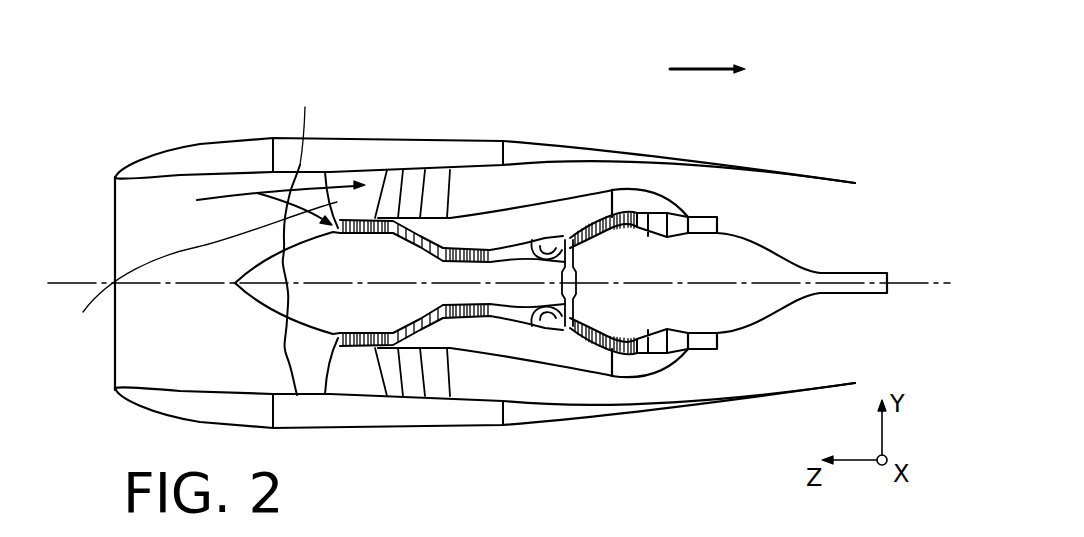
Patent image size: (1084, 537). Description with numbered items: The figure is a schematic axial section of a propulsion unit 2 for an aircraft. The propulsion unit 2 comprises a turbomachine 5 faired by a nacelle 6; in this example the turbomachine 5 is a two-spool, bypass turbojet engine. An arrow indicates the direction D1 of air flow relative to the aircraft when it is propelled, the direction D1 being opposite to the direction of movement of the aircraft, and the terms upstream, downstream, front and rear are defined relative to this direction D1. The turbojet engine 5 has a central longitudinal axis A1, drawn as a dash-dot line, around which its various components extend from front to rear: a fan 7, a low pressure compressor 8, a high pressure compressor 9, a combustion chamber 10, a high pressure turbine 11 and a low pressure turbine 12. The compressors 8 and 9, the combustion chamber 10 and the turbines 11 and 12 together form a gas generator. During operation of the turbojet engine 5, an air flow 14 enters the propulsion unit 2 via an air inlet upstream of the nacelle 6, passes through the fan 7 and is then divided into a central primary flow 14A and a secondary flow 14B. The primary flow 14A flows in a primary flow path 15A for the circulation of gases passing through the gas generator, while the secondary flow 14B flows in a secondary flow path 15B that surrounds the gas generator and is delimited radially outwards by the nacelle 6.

The propulsion unit 2 is at (206, 92).
The turbomachine 5 is at (745, 206).
The nacelle 6 is at (397, 150).
The fan 7 is at (298, 350).
The low pressure compressor 8 is at (367, 210).
The high pressure compressor 9 is at (480, 242).
The combustion chamber 10 is at (544, 232).
The high pressure turbine 11 is at (597, 209).
The low pressure turbine 12 is at (640, 207).
The air flow 14 is at (203, 197).
The central primary flow 14A is at (196, 270).
The secondary flow 14B is at (305, 123).
The primary flow path 15A is at (433, 320).
The secondary flow path 15B is at (570, 393).
The central longitudinal axis A1 is at (57, 283).
The direction of air flow D1 is at (703, 67).